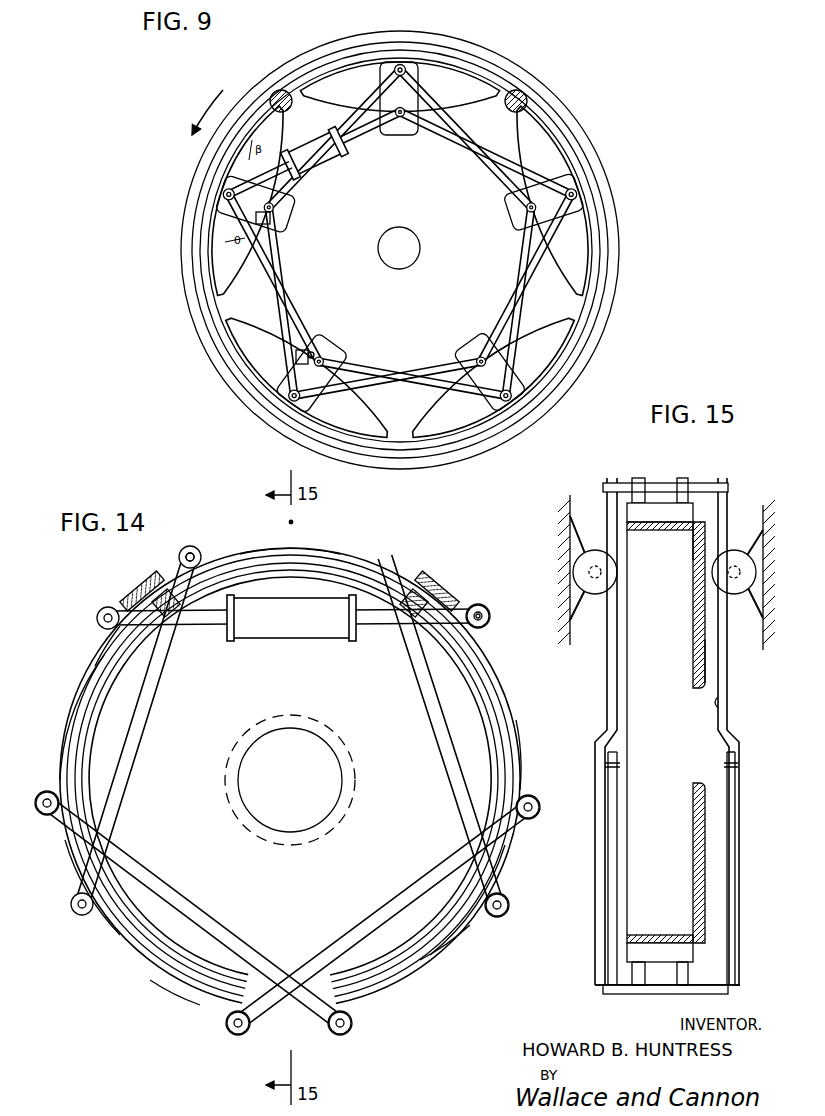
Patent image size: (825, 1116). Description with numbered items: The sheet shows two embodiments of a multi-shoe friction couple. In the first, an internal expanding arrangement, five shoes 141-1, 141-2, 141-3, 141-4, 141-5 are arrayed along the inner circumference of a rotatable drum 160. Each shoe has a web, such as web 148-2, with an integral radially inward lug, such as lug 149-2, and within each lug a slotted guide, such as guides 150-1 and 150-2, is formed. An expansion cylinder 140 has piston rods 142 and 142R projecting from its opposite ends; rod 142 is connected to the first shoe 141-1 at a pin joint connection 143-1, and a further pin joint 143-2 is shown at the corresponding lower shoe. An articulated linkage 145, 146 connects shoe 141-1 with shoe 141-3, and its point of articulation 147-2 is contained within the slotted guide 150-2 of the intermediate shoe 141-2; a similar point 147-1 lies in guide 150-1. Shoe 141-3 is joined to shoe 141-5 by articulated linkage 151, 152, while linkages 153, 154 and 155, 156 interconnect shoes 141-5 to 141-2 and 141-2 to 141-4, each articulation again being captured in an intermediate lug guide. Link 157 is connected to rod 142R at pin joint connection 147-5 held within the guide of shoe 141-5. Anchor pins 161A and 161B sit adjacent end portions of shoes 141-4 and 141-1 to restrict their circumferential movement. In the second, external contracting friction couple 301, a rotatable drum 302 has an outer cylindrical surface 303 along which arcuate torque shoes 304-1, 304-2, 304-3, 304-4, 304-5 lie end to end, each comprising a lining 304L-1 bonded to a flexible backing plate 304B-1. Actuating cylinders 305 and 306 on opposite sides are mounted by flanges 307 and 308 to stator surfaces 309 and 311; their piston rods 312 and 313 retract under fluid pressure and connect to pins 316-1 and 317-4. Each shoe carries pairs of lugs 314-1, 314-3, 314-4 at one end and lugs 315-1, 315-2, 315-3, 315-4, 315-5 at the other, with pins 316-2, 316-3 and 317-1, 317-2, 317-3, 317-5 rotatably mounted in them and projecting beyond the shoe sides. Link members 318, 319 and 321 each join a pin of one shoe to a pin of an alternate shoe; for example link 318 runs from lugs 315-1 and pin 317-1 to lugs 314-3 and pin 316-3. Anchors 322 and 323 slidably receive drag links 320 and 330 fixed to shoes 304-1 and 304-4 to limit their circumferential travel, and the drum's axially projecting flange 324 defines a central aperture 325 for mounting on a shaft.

In FIG. 9, the spring cylinder 140 is at (327, 163).
In FIG. 9, the shoe 141-1 is at (226, 266).
In FIG. 9, the shoe 141-2 is at (368, 423).
In FIG. 9, the shoe 141-3 is at (585, 322).
In FIG. 9, the shoe 141-4 is at (582, 282).
In FIG. 9, the shoe 141-5 is at (480, 100).
In FIG. 9, the piston rod 142 is at (265, 176).
In FIG. 9, the piston rod 142R is at (363, 131).
In FIG. 9, the pin joint connection 143-1 is at (224, 198).
In FIG. 9, the pivot pin 143-2 is at (291, 401).
In FIG. 9, the articulated linkage 145 is at (299, 327).
In FIG. 9, the articulated linkage 146 is at (368, 381).
In FIG. 9, the pivot 147-1 is at (276, 208).
In FIG. 9, the point of articulation 147-2 is at (324, 363).
In FIG. 9, the pin joint connection 147-5 is at (403, 118).
In FIG. 9, the web 148-2 is at (328, 413).
In FIG. 9, the lug 149-2 is at (314, 353).
In FIG. 9, the slotted guide 150-1 is at (272, 222).
In FIG. 9, the slotted guide 150-2 is at (296, 353).
In FIG. 9, the articulated linkage 151 is at (520, 256).
In FIG. 9, the articulated linkage 152 is at (493, 173).
In FIG. 9, the linkage 153 is at (364, 111).
In FIG. 9, the linkage 154 is at (278, 252).
In FIG. 9, the linkage 155 is at (428, 380).
In FIG. 9, the linkage 156 is at (580, 260).
In FIG. 9, the link 157 is at (495, 158).
In FIG. 9, the rotatable drum 160 is at (184, 270).
In FIG. 9, the anchor pin 161A is at (519, 92).
In FIG. 9, the anchor pin 161B is at (275, 91).
In FIG. 14, the friction couple 301 is at (117, 1015).
In FIG. 15, the friction couple 301 is at (592, 982).
In FIG. 14, the rotatable drum 302 is at (409, 814).
In FIG. 14, the outer cylindrical surface 303 is at (420, 900).
In FIG. 15, the outer cylindrical surface 303 is at (642, 523).
In FIG. 14, the torque shoe 304-1 is at (85, 667).
In FIG. 14, the torque shoe 304-2 is at (125, 948).
In FIG. 15, the torque shoe 304-2 is at (698, 929).
In FIG. 14, the torque shoe 304-3 is at (435, 986).
In FIG. 14, the torque shoe 304-4 is at (505, 681).
In FIG. 14, the torque shoe 304-5 is at (337, 550).
In FIG. 15, the torque shoe 304-5 is at (698, 534).
In FIG. 14, the flexible backing plate 304B-1 is at (93, 661).
In FIG. 14, the lining 304L-1 is at (82, 698).
In FIG. 14, the actuating cylinder 305 is at (288, 641).
In FIG. 15, the actuating cylinder 305 is at (597, 549).
In FIG. 15, the actuating cylinder 306 is at (735, 549).
In FIG. 15, the flange 307 is at (567, 541).
In FIG. 15, the flange 308 is at (757, 540).
In FIG. 14, the surface 309 is at (483, 617).
In FIG. 15, the surface 311 is at (764, 616).
In FIG. 14, the piston rod 312 is at (202, 628).
In FIG. 14, the piston rod 313 is at (367, 629).
In FIG. 14, the lugs 314-1 is at (124, 601).
In FIG. 14, the lugs 314-3 is at (351, 1028).
In FIG. 14, the lugs 314-4 is at (537, 795).
In FIG. 14, the lugs 315-1 is at (52, 822).
In FIG. 14, the lugs 315-2 is at (238, 1035).
In FIG. 15, the lugs 315-2 is at (639, 988).
In FIG. 14, the lugs 315-3 is at (499, 916).
In FIG. 14, the lugs 315-4 is at (488, 623).
In FIG. 14, the lugs 315-5 is at (201, 563).
In FIG. 15, the lugs 315-5 is at (641, 477).
In FIG. 14, the pin 316-1 is at (100, 618).
In FIG. 14, the pin 316-2 is at (73, 900).
In FIG. 15, the pin 316-2 is at (741, 841).
In FIG. 14, the pin 316-3 is at (340, 1035).
In FIG. 14, the pin 317-1 is at (49, 795).
In FIG. 15, the pin 317-1 is at (621, 758).
In FIG. 14, the pin 317-2 is at (228, 1023).
In FIG. 15, the pin 317-2 is at (689, 988).
In FIG. 14, the pin 317-3 is at (500, 897).
In FIG. 14, the pin 317-4 is at (492, 600).
In FIG. 14, the pin 317-5 is at (222, 530).
In FIG. 15, the pin 317-5 is at (712, 481).
In FIG. 14, the link member 318 is at (194, 911).
In FIG. 15, the link member 318 is at (596, 890).
In FIG. 14, the link member 319 is at (440, 750).
In FIG. 14, the drag link 320 is at (122, 597).
In FIG. 15, the drag link 320 is at (607, 703).
In FIG. 14, the link member 321 is at (386, 911).
In FIG. 15, the link member 321 is at (601, 980).
In FIG. 14, the anchor 322 is at (132, 582).
In FIG. 14, the anchor 323 is at (437, 578).
In FIG. 15, the axially projecting flange 324 is at (724, 678).
In FIG. 14, the central aperture 325 is at (333, 782).
In FIG. 15, the central aperture 325 is at (720, 703).
In FIG. 14, the drag link 330 is at (452, 595).